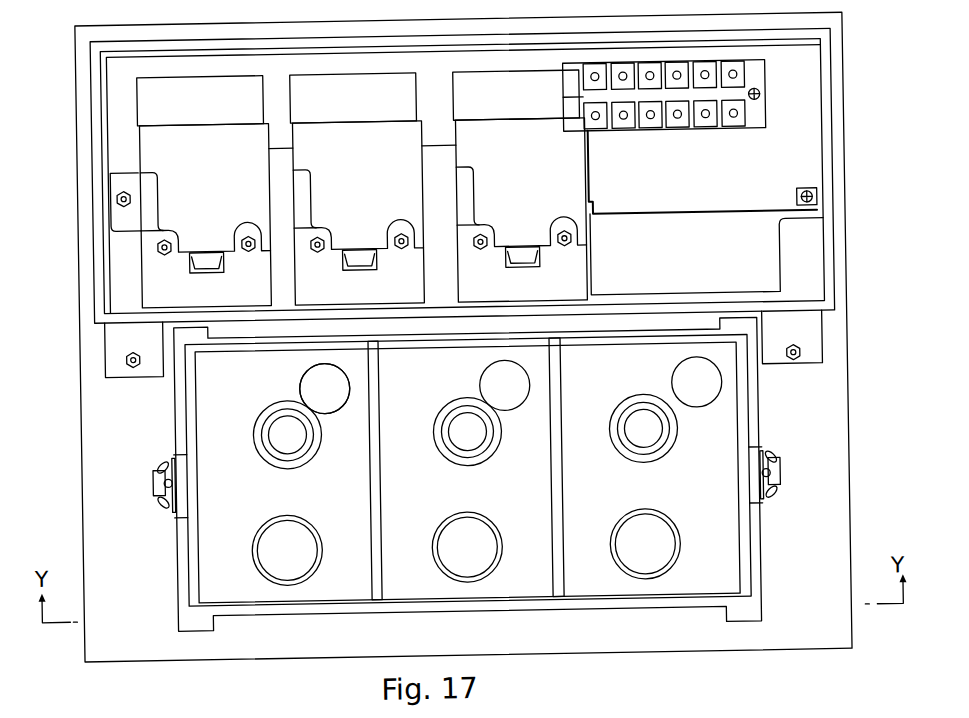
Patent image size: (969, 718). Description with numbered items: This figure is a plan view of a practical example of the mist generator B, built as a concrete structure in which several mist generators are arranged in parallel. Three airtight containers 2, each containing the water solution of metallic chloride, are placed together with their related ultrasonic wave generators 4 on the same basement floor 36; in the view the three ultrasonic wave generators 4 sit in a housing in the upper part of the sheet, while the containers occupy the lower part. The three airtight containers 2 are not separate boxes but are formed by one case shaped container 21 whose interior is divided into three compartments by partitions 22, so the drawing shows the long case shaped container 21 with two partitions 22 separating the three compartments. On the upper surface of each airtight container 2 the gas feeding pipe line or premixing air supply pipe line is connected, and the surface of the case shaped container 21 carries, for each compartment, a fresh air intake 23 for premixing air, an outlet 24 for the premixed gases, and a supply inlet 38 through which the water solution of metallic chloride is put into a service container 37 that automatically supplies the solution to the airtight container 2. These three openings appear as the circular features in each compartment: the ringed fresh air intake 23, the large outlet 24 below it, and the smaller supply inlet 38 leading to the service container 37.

The mist generator B is at (133, 644).
The basement floor 36 is at (97, 459).
The ultrasonic wave generator 4 is at (149, 94).
The case shaped container 21 is at (599, 607).
The airtight container 2 is at (334, 588).
The partition 22 is at (395, 589).
The supply inlet 38 is at (305, 379).
The service container 37 is at (336, 399).
The fresh air intake 23 is at (291, 444).
The outlet 24 is at (278, 567).